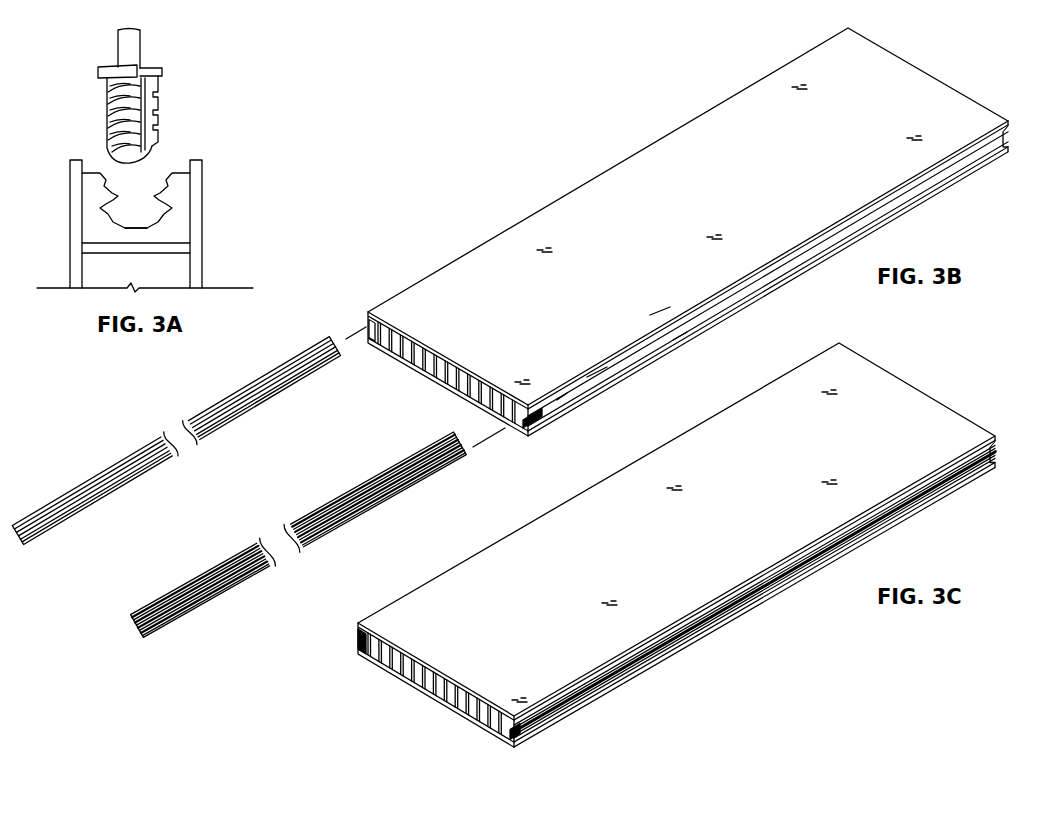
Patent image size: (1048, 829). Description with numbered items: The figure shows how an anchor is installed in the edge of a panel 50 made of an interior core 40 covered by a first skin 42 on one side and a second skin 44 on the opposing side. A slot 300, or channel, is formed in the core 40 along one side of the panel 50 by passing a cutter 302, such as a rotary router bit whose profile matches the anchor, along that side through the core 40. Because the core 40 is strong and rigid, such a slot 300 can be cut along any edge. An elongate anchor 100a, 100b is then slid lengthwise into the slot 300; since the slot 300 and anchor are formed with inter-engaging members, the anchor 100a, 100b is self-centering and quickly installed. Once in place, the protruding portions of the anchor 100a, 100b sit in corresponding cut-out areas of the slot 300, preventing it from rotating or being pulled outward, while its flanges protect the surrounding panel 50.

In FIG. 3A, the core 40 is at (178, 232).
In FIG. 3B, the core 40 is at (700, 318).
In FIG. 3C, the core 40 is at (427, 695).
In FIG. 3A, the first skin 42 is at (75, 207).
In FIG. 3B, the first skin 42 is at (927, 200).
In FIG. 3C, the first skin 42 is at (920, 507).
In FIG. 3A, the second skin 44 is at (196, 197).
In FIG. 3B, the second skin 44 is at (952, 140).
In FIG. 3C, the second skin 44 is at (940, 458).
In FIG. 3A, the panel 50 is at (221, 166).
In FIG. 3B, the panel 50 is at (816, 275).
In FIG. 3C, the panel 50 is at (953, 390).
In FIG. 3B, the anchor 100a is at (391, 516).
In FIG. 3C, the anchor 100a is at (505, 738).
In FIG. 3B, the anchor 100b is at (288, 406).
In FIG. 3C, the anchor 100b is at (361, 655).
In FIG. 3A, the slot 300 is at (150, 180).
In FIG. 3B, the slot 300 is at (538, 410).
In FIG. 3A, the cutter 302 is at (158, 108).